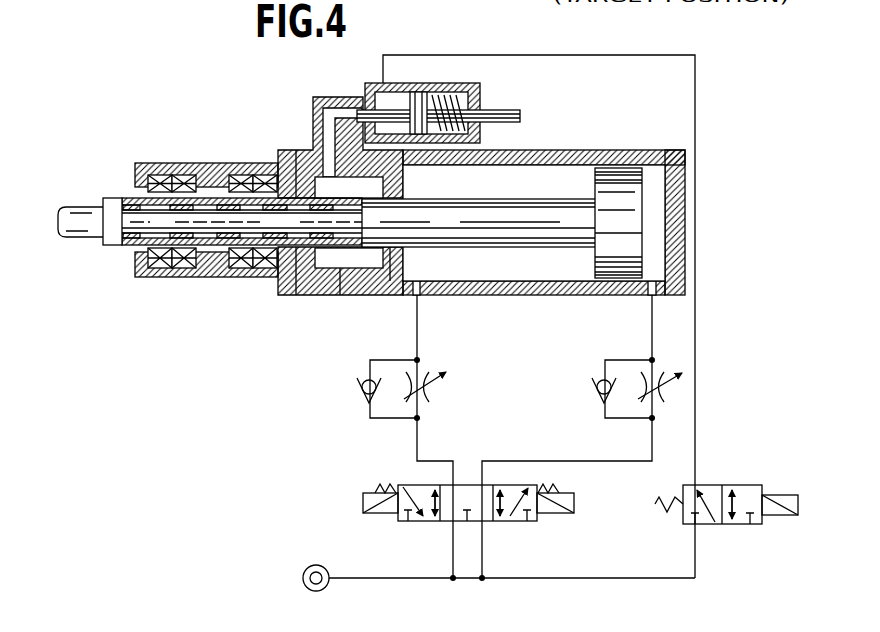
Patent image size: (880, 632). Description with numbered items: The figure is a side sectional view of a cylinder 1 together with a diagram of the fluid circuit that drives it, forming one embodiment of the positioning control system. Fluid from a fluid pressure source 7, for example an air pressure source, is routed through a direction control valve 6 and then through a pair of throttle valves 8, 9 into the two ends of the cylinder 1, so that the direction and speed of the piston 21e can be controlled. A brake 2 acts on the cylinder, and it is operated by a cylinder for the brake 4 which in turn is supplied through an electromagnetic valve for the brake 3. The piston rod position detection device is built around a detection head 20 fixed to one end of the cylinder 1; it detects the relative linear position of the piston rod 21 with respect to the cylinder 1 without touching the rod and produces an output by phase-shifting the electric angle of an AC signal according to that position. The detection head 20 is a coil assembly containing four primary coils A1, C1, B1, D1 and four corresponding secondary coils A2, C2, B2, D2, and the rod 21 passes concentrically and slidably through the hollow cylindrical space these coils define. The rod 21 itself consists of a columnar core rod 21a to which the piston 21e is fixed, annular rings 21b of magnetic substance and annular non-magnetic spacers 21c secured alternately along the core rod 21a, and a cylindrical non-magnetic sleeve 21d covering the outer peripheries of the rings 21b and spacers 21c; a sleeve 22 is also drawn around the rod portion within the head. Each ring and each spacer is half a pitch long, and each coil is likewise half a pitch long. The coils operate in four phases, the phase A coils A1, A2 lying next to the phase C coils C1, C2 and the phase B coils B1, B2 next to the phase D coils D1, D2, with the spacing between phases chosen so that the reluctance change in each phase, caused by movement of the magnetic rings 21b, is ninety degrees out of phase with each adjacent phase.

The cylinder 1 is at (538, 153).
The brake 2 is at (345, 263).
The electromagnetic valve for the brake 3 is at (744, 485).
The cylinder for the brake 4 is at (424, 84).
The direction control valve 6 is at (540, 521).
The fluid pressure source 7 is at (323, 565).
The throttle valve 8 is at (425, 400).
The throttle valve 9 is at (668, 398).
The detection head 20 is at (213, 155).
The piston rod 21 is at (100, 243).
The core rod 21a is at (137, 215).
The annular ring 21b is at (132, 240).
The annular non-magnetic spacer 21c is at (129, 246).
The non-magnetic sleeve 21d is at (127, 197).
The piston 21e is at (621, 172).
The sleeve 22 is at (140, 163).
The primary coil of phase A A1 is at (163, 174).
The primary coil of phase C C1 is at (182, 174).
The primary coil of phase B B1 is at (243, 174).
The primary coil of phase D D1 is at (260, 174).
The secondary coil of phase A A2 is at (137, 277).
The secondary coil of phase C C2 is at (220, 263).
The secondary coil of phase B B2 is at (226, 268).
The secondary coil of phase D D2 is at (281, 293).